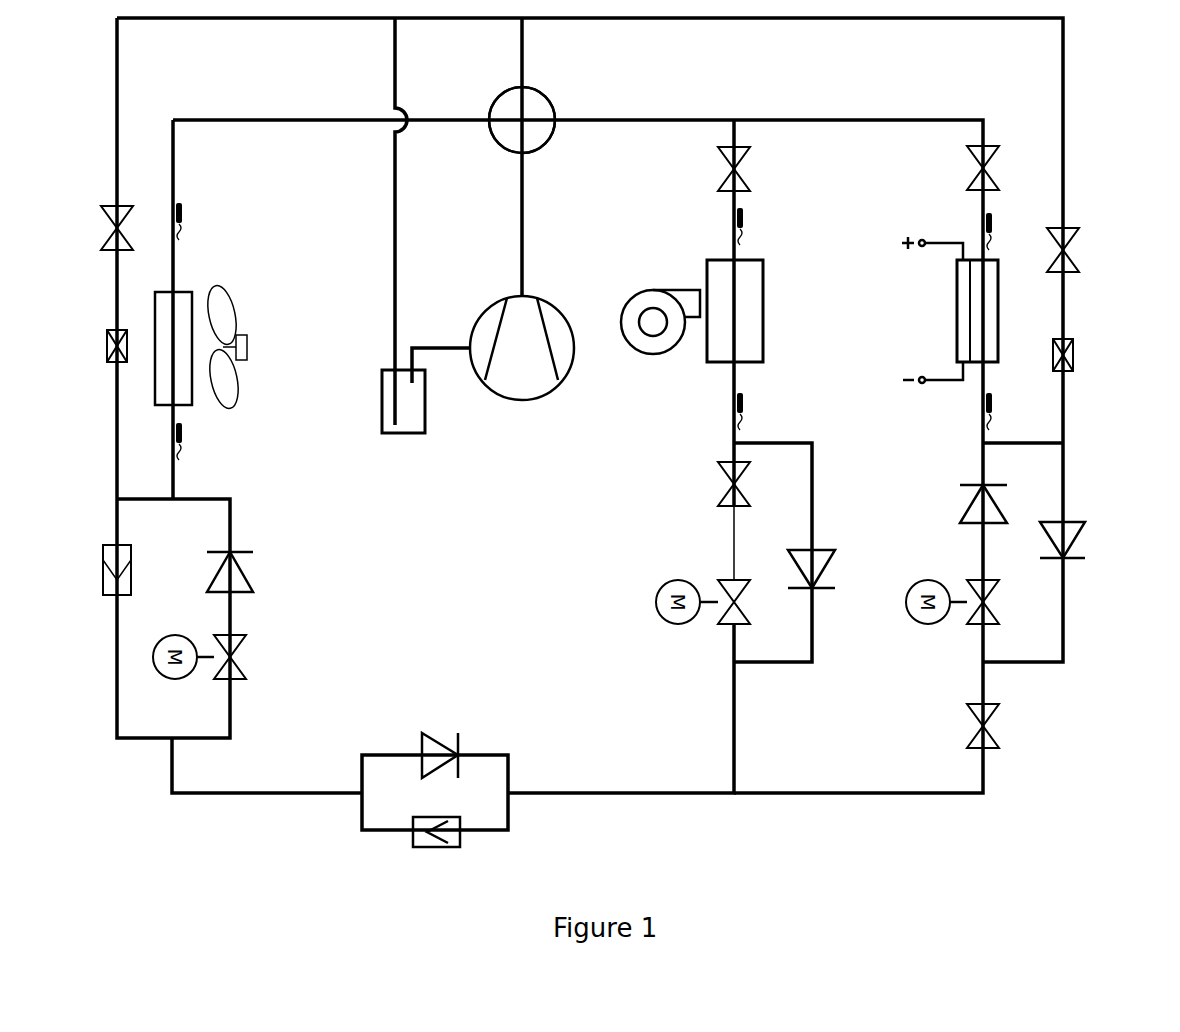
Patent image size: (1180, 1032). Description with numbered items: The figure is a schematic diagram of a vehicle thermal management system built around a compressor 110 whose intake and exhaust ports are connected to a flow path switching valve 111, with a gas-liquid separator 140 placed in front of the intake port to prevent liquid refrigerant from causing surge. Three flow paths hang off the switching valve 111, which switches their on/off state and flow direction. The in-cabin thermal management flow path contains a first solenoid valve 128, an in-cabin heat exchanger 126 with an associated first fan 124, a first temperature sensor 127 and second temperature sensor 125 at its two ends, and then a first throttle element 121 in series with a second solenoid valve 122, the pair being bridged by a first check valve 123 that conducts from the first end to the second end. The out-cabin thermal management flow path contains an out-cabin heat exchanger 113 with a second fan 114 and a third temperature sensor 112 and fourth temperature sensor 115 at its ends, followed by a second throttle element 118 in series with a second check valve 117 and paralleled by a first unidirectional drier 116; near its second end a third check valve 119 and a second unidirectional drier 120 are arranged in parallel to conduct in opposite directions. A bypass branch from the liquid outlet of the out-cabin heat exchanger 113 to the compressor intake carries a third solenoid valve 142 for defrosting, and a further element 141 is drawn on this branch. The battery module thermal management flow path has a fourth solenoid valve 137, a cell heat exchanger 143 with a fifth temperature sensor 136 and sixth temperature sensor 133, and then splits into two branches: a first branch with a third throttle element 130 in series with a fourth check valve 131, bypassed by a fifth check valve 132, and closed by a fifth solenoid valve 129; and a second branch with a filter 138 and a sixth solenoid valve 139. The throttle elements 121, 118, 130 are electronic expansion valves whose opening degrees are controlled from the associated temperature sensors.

The compressor 110 is at (538, 403).
The flow path switching valve 111 is at (540, 160).
The third temperature sensor 112 is at (188, 217).
The out-cabin heat exchanger 113 is at (192, 285).
The second fan 114 is at (258, 338).
The fourth temperature sensor 115 is at (190, 437).
The first unidirectional drier 116 is at (104, 543).
The second check valve 117 is at (250, 568).
The second throttle element 118 is at (250, 652).
The third check valve 119 is at (445, 725).
The second unidirectional drier 120 is at (465, 842).
The first throttle element 121 is at (655, 600).
The second solenoid valve 122 is at (718, 490).
The first check valve 123 is at (830, 595).
The first fan 124 is at (633, 348).
The second temperature sensor 125 is at (750, 400).
The in-cabin heat exchanger 126 is at (770, 322).
The first temperature sensor 127 is at (745, 228).
The first solenoid valve 128 is at (745, 172).
The fifth solenoid valve 129 is at (1000, 740).
The third throttle element 130 is at (912, 580).
The fourth check valve 131 is at (957, 505).
The fifth check valve 132 is at (1082, 543).
The sixth temperature sensor 133 is at (978, 397).
The fifth temperature sensor 136 is at (992, 210).
The fourth solenoid valve 137 is at (990, 140).
The filter 138 is at (1068, 332).
The sixth solenoid valve 139 is at (1070, 222).
The gas-liquid separator 140 is at (412, 440).
The filter 141 is at (104, 336).
The third solenoid valve 142 is at (100, 208).
The cell heat exchanger 143 is at (1003, 327).